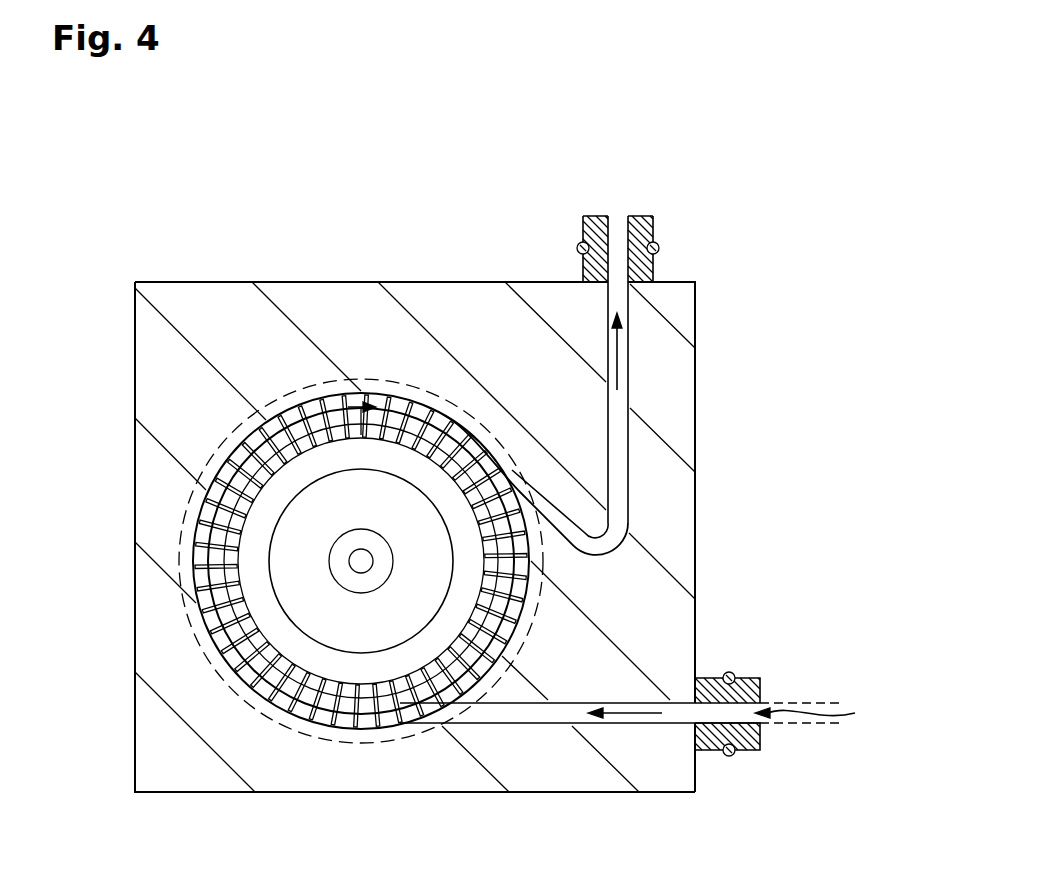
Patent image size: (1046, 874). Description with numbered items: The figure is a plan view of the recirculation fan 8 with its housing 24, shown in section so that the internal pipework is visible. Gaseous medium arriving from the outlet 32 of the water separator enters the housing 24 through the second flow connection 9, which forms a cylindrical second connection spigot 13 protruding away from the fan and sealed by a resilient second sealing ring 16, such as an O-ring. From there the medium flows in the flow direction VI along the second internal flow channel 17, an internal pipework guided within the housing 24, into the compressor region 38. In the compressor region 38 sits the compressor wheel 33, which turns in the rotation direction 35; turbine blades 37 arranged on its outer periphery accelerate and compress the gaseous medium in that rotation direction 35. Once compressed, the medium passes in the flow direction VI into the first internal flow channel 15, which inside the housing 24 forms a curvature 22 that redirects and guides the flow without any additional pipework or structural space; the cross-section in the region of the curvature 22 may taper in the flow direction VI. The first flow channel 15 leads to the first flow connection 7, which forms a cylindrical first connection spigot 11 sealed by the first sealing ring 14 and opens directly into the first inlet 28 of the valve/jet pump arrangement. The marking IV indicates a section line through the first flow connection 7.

The recirculation fan 8 is at (180, 227).
The housing 24 is at (284, 282).
The compressor region 38 is at (386, 384).
The rotation direction 35 is at (200, 545).
The turbine blades 37 is at (307, 727).
The compressor wheel 33 is at (343, 628).
The first flow connection 7 is at (622, 338).
The first inlet 28 is at (622, 338).
The first internal flow channel 15 is at (618, 437).
The curvature 22 is at (633, 546).
The first connection spigot 11 is at (650, 270).
The second sealing ring 16 is at (660, 247).
The section line IV is at (629, 366).
The second internal flow channel 17 is at (535, 713).
The flow direction VI is at (638, 713).
The second connection spigot 13 is at (710, 738).
The first sealing ring 14 is at (731, 756).
The outlet 32 is at (813, 725).
The second flow connection 9 is at (815, 716).